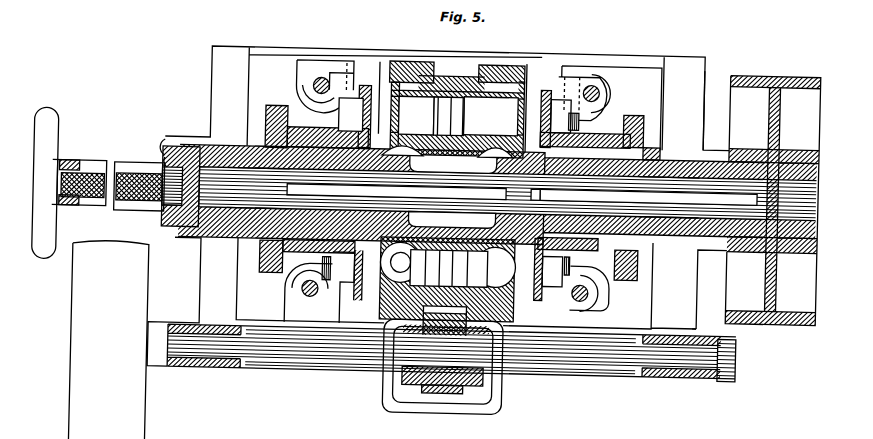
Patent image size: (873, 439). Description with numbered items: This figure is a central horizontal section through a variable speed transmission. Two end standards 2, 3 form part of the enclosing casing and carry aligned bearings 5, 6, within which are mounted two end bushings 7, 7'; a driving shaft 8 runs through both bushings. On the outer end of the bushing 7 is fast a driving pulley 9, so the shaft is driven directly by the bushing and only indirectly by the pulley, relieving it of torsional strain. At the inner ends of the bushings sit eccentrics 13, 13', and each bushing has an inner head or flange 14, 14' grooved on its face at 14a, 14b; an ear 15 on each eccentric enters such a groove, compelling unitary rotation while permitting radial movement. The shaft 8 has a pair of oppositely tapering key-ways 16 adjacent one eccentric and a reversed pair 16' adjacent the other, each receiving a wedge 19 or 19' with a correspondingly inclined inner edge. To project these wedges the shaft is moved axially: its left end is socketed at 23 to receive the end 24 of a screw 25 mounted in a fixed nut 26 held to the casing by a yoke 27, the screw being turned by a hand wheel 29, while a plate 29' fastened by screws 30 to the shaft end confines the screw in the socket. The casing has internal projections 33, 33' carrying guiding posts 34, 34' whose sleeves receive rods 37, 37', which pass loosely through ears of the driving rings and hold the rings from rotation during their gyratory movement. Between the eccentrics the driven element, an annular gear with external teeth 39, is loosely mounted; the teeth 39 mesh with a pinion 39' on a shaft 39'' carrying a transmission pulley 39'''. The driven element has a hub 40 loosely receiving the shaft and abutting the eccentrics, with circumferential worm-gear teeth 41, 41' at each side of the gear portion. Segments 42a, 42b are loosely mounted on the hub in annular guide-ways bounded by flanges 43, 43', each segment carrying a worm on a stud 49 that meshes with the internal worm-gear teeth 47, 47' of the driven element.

The end standard 2 is at (700, 288).
The end standard 3 is at (203, 279).
The bearing 5 is at (713, 138).
The bearing 6 is at (197, 145).
The bushing 7 is at (600, 138).
The bushing 7' is at (270, 126).
The driving shaft 8 is at (711, 239).
The driving pulley 9 is at (773, 64).
The eccentric 13 is at (587, 258).
The eccentric 13' is at (321, 114).
The inner head or flange 14 is at (434, 148).
The inner head or flange 14' is at (295, 257).
The groove 14a is at (630, 170).
The groove 14b is at (262, 167).
The ear or projection 15 is at (280, 180).
The key-way 16 is at (649, 162).
The key-way 16' is at (444, 219).
The wedge or key 19 is at (573, 159).
The wedge or key 19' is at (375, 186).
The socket 23 is at (177, 218).
The end of screw 24 is at (173, 138).
The screw 25 is at (96, 175).
The fixed nut 26 is at (70, 163).
The yoke 27 is at (90, 209).
The hand wheel 29 is at (48, 170).
The plate 29' is at (157, 149).
The screws 30 is at (163, 170).
The internal projection 33 is at (597, 170).
The internal projection 33' is at (304, 174).
The guiding post 34 is at (606, 175).
The guiding post 34' is at (291, 170).
The rod 37 is at (558, 280).
The rod 37' is at (327, 278).
The external teeth 39 is at (457, 126).
The pinion 39' is at (443, 379).
The shaft 39'' is at (451, 361).
The transmission pulley 39''' is at (131, 339).
The hub 40 is at (405, 142).
The circumferential teeth 41 is at (506, 199).
The circumferential teeth 41' is at (438, 278).
The segment 42a is at (416, 115).
The segment 42b is at (475, 116).
The flange 43 is at (502, 54).
The flange 43' is at (414, 54).
The internal teeth 47 is at (547, 89).
The internal teeth 47' is at (377, 86).
The stud 49 is at (383, 282).